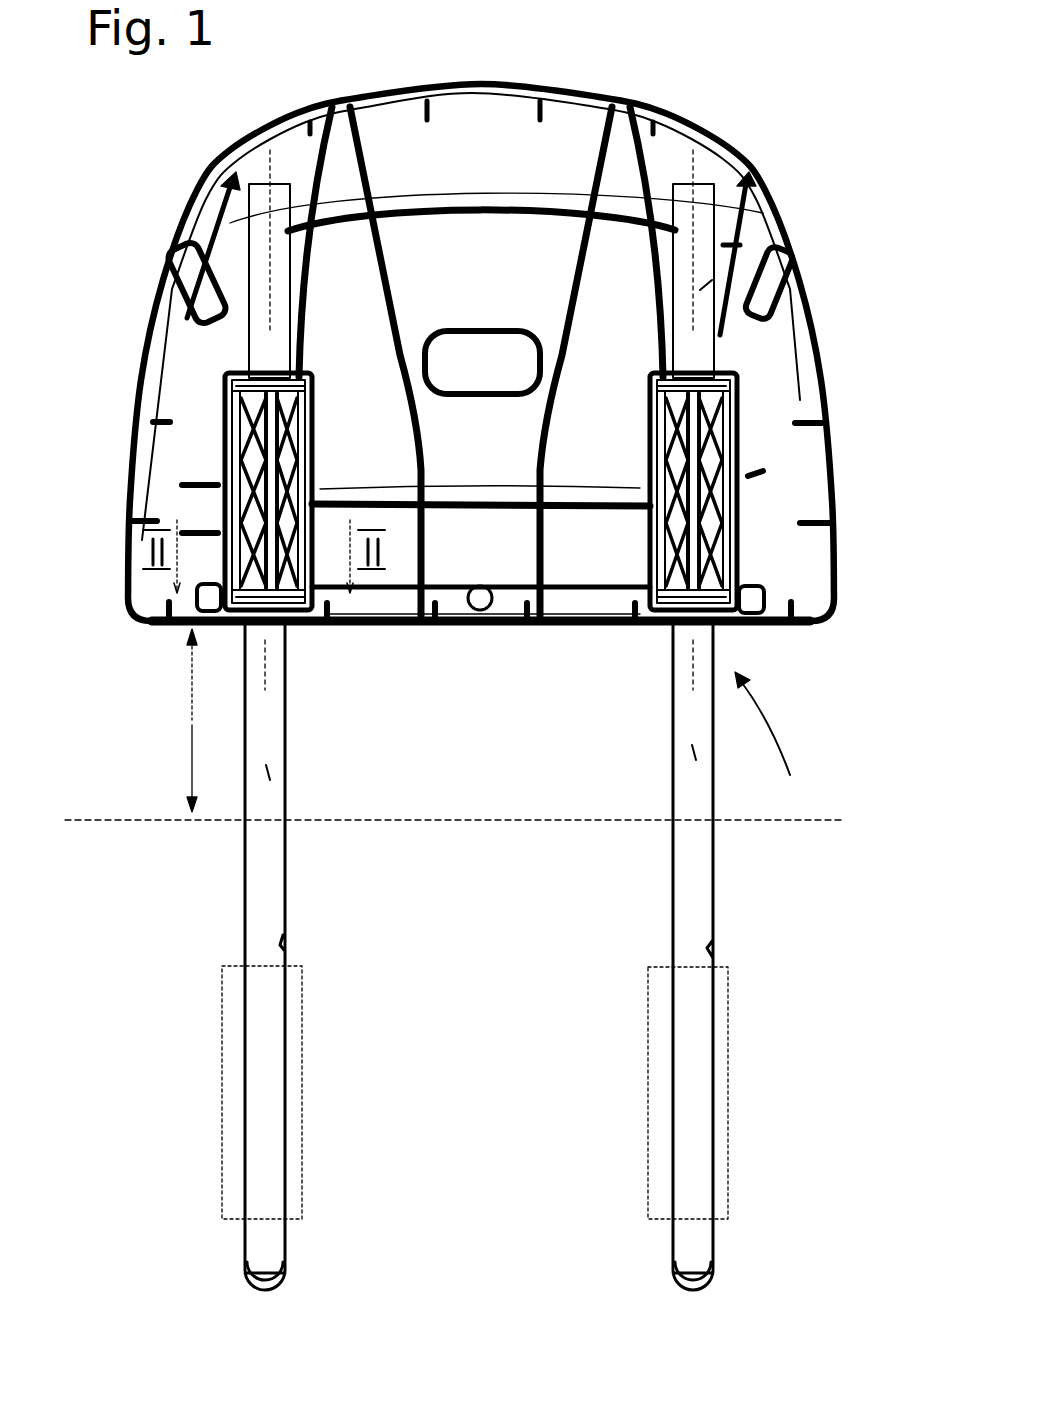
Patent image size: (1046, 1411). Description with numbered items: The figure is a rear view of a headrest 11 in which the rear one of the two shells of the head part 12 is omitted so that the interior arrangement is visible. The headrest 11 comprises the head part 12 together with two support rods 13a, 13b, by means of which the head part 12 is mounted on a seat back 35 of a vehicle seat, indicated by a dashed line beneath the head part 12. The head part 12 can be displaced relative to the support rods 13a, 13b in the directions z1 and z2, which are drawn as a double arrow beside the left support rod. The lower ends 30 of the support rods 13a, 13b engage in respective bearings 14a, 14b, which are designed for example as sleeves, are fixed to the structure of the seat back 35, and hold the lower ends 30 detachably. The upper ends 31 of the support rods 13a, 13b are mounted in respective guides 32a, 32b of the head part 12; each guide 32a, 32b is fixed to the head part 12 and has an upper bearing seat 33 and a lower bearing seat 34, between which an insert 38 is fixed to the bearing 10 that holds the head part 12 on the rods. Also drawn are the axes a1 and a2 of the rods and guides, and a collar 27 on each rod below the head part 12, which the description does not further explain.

The bearing 10 is at (303, 372).
The headrest 11 is at (773, 734).
The head part 12 is at (700, 290).
The support rod 13a is at (262, 890).
The support rod 13b is at (690, 885).
The bearing 14a is at (232, 1095).
The bearing 14b is at (660, 1098).
The collar 27 is at (268, 770).
The lower end 30 is at (262, 1255).
The upper end 31 is at (180, 280).
The guide 32a is at (235, 480).
The guide 32b is at (740, 478).
The upper bearing seat 33 is at (220, 415).
The lower bearing seat 34 is at (185, 626).
The seat back 35 is at (415, 820).
The insert 38 is at (300, 386).
The axis a1 is at (265, 195).
The axis a2 is at (265, 235).
The direction z1 is at (206, 674).
The direction z2 is at (206, 768).